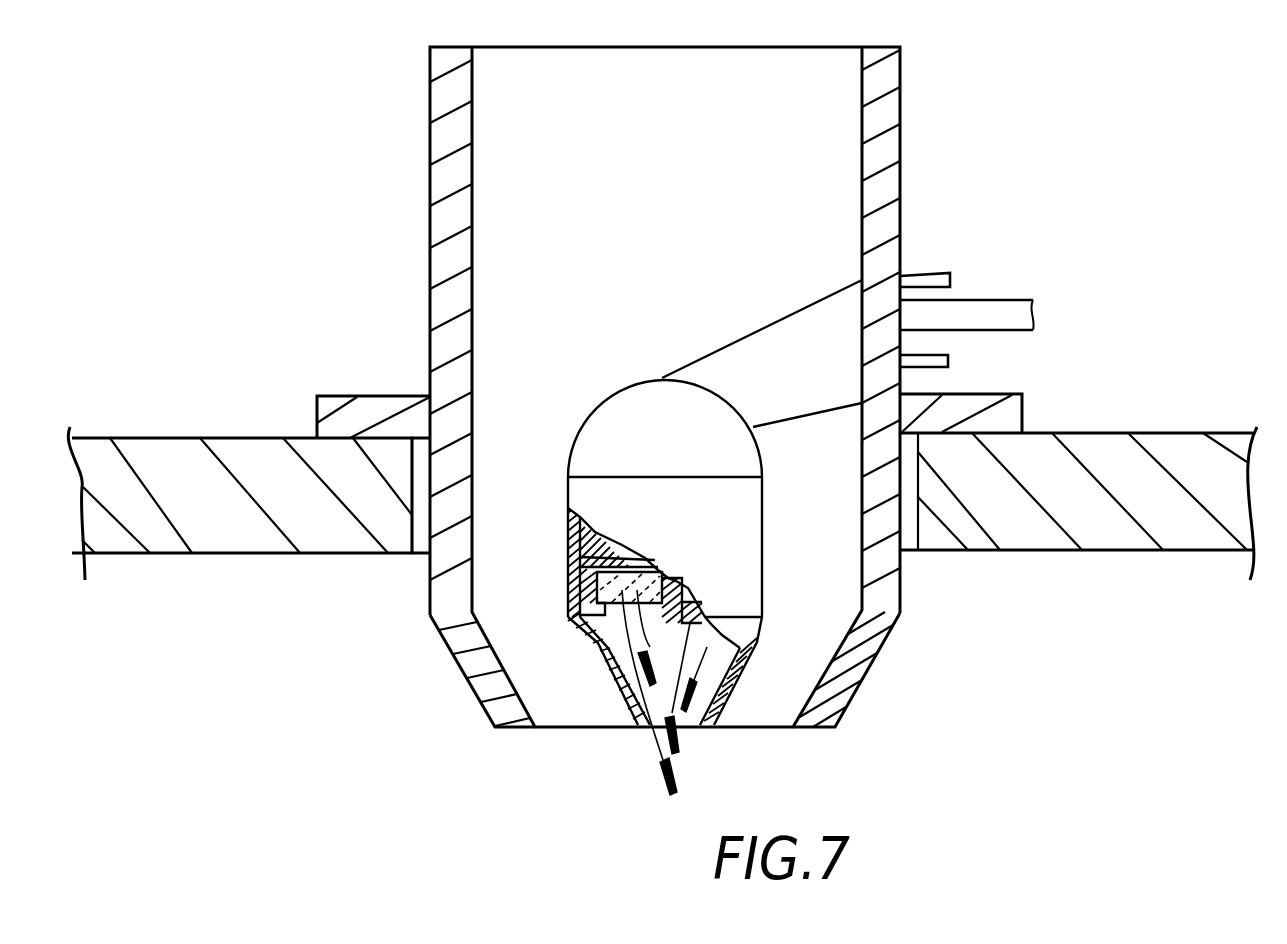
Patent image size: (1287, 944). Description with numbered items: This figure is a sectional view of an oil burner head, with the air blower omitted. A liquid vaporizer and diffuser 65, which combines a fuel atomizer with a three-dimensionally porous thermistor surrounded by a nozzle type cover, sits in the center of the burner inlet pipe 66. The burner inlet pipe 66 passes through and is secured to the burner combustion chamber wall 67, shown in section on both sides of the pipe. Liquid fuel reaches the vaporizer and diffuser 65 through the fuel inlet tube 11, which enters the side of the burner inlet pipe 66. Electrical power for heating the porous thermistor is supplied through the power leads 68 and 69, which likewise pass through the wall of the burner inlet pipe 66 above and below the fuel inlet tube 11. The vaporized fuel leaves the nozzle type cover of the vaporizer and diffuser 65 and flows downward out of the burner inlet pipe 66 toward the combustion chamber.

The burner inlet pipe 66 is at (430, 72).
The burner combustion chamber wall 67 is at (223, 556).
The power lead 68 is at (950, 274).
The power lead 69 is at (948, 361).
The fuel inlet tube 11 is at (1033, 300).
The liquid vaporizer and diffuser 65 is at (778, 503).